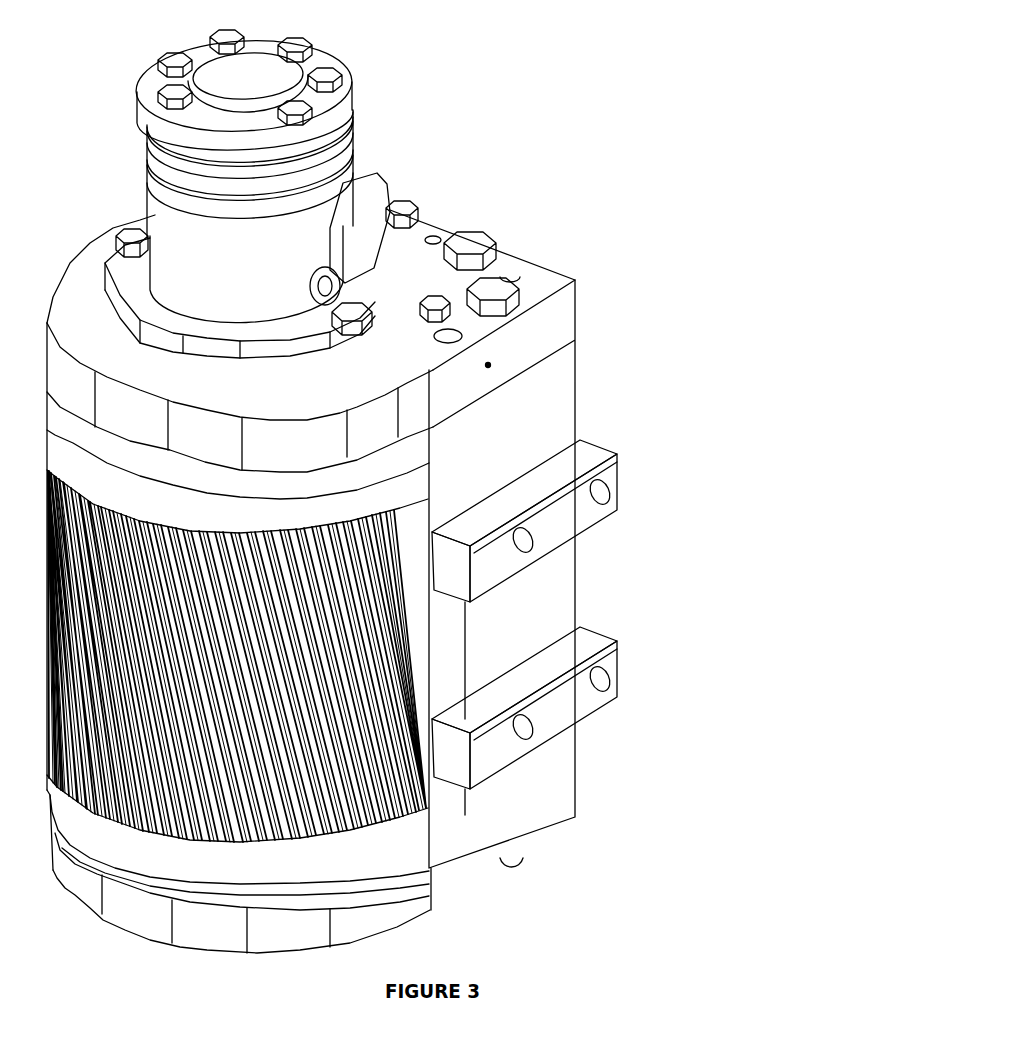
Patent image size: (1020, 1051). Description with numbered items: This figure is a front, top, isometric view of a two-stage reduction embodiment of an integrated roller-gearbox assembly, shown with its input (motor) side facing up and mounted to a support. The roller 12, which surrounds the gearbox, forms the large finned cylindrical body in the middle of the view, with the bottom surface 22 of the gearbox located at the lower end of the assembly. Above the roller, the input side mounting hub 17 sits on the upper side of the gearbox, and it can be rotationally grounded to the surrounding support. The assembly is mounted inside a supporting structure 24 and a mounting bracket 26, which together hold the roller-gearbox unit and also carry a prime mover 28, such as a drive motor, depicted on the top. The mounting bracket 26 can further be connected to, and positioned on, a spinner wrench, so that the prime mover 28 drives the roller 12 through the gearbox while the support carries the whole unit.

The roller 12 is at (385, 660).
The input side mounting hub 17 is at (357, 467).
The bottom surface 22 is at (345, 880).
The supporting structure 24 is at (557, 313).
The mounting bracket 26 is at (553, 397).
The prime mover 28 is at (345, 158).